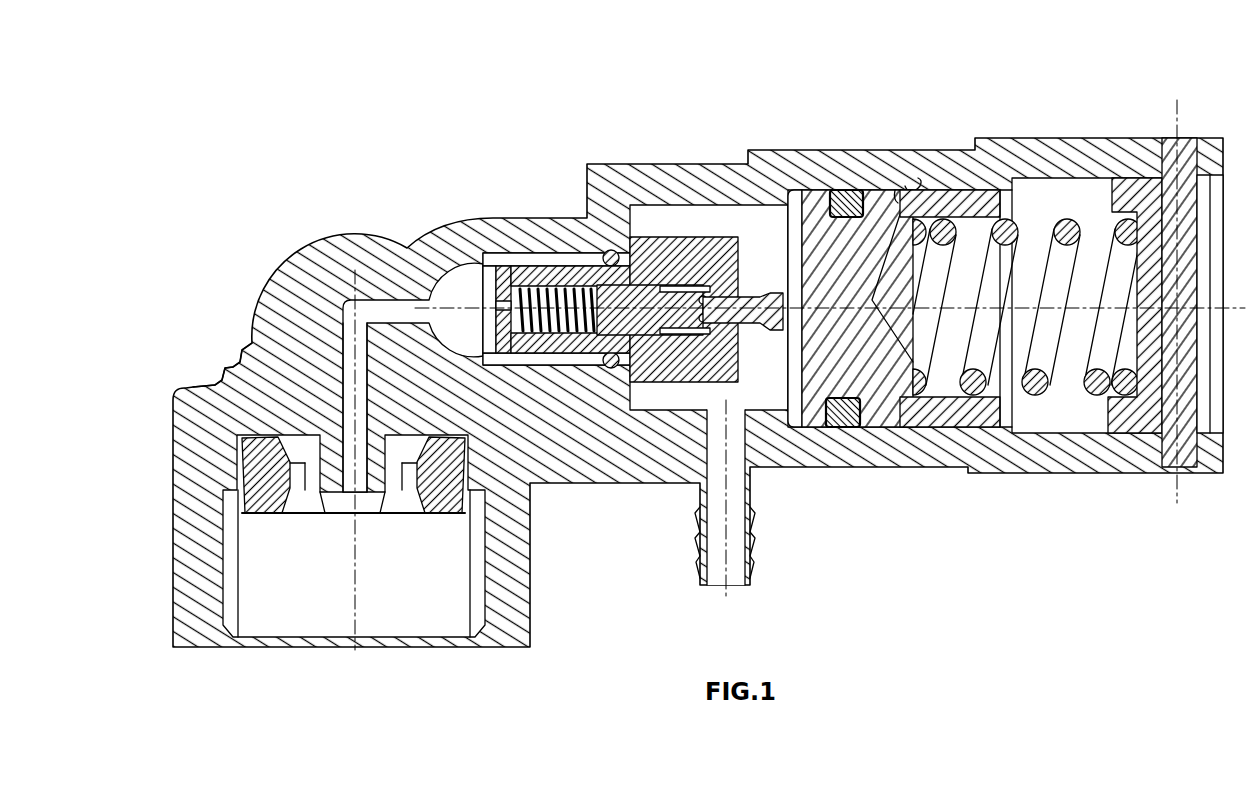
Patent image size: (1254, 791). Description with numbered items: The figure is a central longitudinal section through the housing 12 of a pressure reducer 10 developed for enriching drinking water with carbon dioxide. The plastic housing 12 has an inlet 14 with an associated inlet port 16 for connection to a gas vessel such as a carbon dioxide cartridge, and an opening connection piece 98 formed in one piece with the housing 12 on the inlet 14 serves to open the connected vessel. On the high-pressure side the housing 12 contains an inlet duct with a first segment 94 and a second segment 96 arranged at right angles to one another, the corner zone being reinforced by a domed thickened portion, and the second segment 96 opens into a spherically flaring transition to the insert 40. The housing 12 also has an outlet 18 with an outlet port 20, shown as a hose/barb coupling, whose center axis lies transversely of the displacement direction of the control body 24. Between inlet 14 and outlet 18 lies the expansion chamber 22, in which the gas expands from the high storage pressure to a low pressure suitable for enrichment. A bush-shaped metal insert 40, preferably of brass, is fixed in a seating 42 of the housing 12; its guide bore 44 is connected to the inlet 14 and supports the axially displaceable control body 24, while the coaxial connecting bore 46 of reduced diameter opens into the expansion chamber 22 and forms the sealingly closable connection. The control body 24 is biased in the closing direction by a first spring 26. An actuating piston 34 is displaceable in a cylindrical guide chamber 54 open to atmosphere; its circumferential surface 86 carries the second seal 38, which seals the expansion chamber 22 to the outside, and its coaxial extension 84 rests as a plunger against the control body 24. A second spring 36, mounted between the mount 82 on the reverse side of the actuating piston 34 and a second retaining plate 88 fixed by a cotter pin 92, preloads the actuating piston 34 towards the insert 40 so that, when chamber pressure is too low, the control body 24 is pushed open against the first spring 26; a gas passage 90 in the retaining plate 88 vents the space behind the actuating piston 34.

The pressure reducer 10 is at (702, 375).
The housing 12 is at (288, 290).
The inlet 14 is at (357, 486).
The inlet port 16 is at (283, 585).
The outlet 18 is at (737, 537).
The outlet port 20 is at (700, 507).
The expansion chamber 22 is at (784, 252).
The control body 24 is at (647, 303).
The first spring 26 is at (532, 283).
The actuating piston 34 is at (861, 297).
The second spring 36 is at (1045, 362).
The second seal 38 is at (843, 188).
The insert 40 is at (632, 243).
The seating 42 is at (553, 263).
The guide bore 44 is at (630, 300).
The connecting bore 46 is at (737, 357).
The guide chamber 54 is at (1052, 247).
The mount 82 is at (969, 299).
The coaxial extension 84 is at (802, 262).
The circumferential surface 86 is at (895, 195).
The second retaining plate 88 is at (1128, 195).
The gas passage 90 is at (1151, 333).
The cotter pin 92 is at (1163, 178).
The first segment 94 is at (250, 344).
The second segment 96 is at (382, 303).
The opening connection piece 98 is at (330, 455).